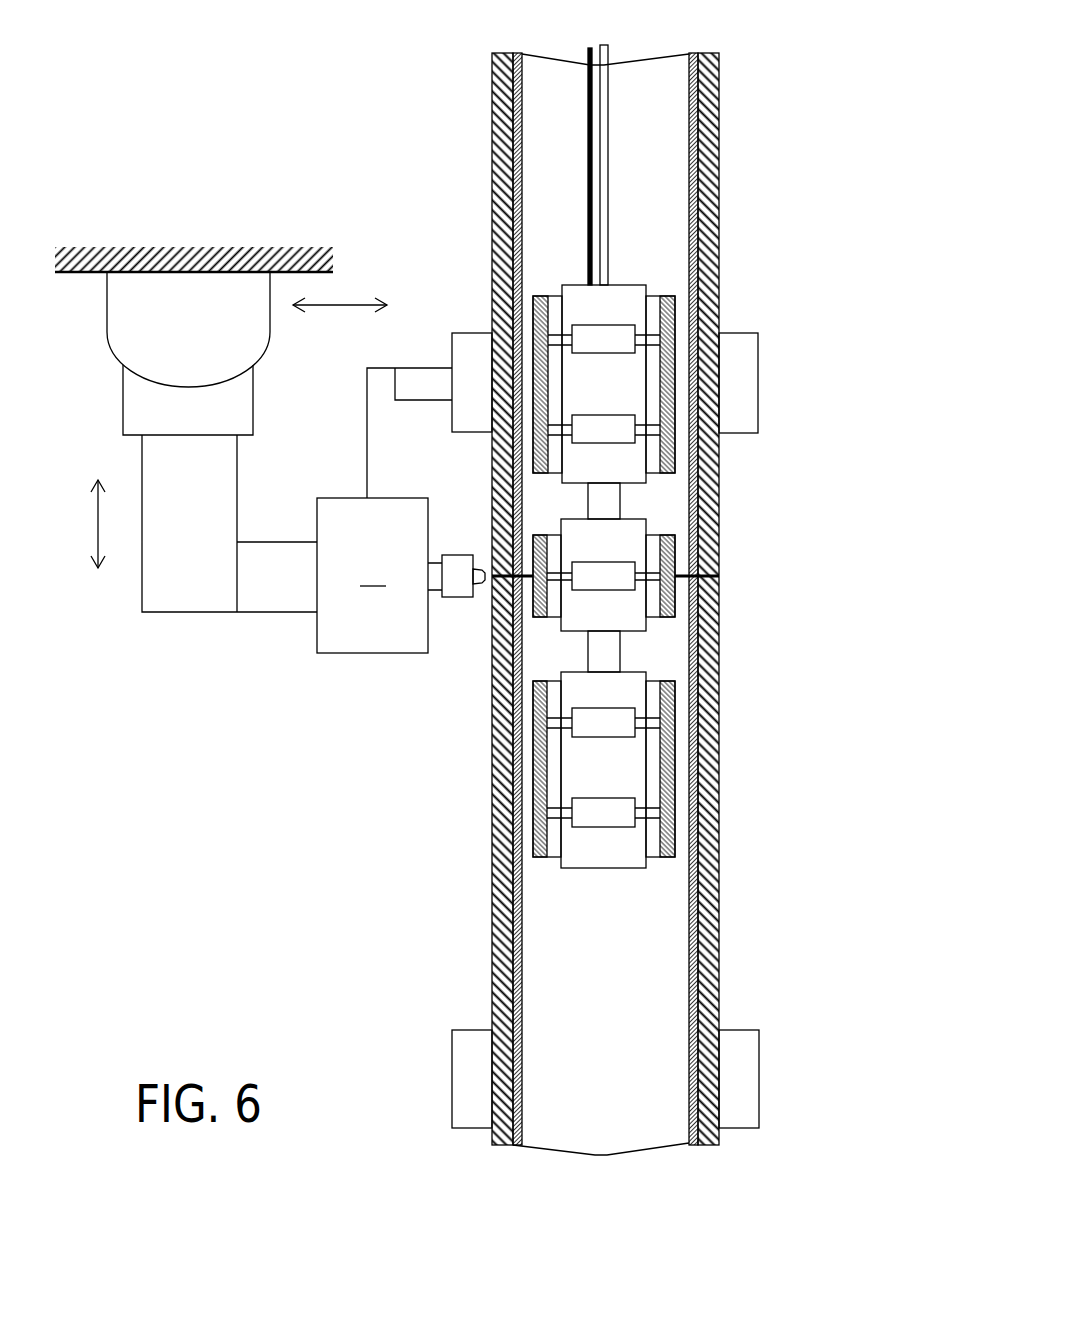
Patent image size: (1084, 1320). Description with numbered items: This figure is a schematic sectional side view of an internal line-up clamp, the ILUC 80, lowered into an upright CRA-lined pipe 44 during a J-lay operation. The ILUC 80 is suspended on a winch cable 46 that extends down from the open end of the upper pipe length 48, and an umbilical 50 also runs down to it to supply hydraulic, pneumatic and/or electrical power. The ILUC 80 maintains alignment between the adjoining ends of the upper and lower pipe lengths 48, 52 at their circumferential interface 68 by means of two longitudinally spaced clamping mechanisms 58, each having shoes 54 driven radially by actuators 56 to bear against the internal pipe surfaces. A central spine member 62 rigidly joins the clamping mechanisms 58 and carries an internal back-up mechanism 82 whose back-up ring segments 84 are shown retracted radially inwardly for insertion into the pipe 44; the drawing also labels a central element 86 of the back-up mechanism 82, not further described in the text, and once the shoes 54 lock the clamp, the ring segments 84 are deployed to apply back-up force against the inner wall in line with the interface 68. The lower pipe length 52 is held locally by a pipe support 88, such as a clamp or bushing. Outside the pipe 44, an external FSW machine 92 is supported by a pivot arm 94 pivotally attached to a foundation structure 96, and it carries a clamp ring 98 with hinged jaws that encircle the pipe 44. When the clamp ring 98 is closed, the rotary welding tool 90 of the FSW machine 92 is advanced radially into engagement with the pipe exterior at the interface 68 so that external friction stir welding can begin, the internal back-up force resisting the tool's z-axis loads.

The pipe 44 is at (442, 101).
The winch cable 46 is at (604, 173).
The upper pipe length 48 is at (709, 293).
The umbilical 50 is at (587, 128).
The lower pipe length 52 is at (497, 970).
The shoes 54 is at (668, 383).
The actuators 56 is at (597, 338).
The clamping mechanisms 58 is at (602, 463).
The spine member 62 is at (610, 657).
The circumferential interface 68 is at (700, 578).
The ILUC 80 is at (561, 248).
The internal back-up mechanism 82 is at (627, 536).
The back-up ring segments 84 is at (672, 603).
The sensor 86 is at (603, 577).
The pipe support 88 is at (734, 1048).
The rotary welding tool 90 is at (457, 583).
The external FSW machine 92 is at (372, 575).
The pivot arm 94 is at (195, 582).
The foundation structure 96 is at (155, 260).
The clamp ring 98 is at (477, 350).